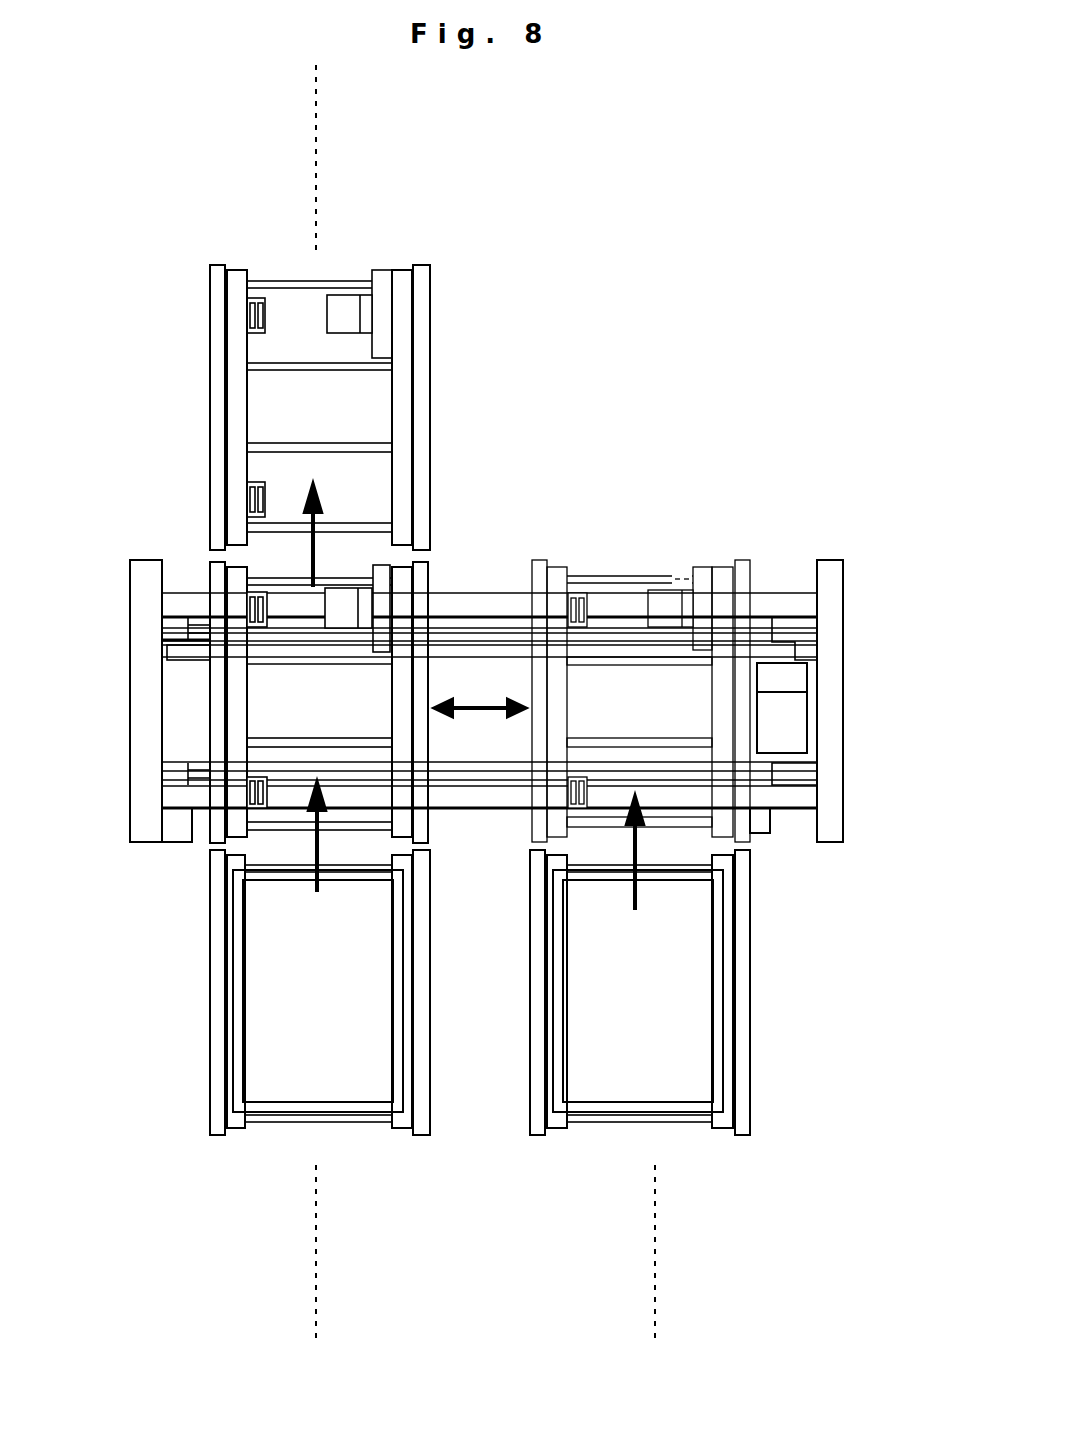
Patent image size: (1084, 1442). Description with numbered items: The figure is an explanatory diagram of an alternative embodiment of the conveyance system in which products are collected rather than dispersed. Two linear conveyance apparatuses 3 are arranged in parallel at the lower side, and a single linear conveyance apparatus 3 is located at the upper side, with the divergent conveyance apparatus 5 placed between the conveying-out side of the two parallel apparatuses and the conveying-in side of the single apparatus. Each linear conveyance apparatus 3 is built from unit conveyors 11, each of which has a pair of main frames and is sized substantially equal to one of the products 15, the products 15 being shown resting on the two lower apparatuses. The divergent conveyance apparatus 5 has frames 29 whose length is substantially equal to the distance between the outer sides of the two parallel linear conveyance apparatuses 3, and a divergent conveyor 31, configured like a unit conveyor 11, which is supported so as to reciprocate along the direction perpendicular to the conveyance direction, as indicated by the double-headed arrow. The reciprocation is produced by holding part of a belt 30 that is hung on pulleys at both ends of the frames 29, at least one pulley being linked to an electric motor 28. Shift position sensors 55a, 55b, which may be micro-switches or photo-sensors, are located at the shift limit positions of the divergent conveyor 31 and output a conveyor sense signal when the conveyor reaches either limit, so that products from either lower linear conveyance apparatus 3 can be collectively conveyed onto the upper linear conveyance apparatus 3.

The linear conveyance apparatus 3 is at (445, 223).
The divergent conveyance apparatus 5 is at (768, 500).
The unit conveyor 11 is at (430, 305).
The product 15 is at (255, 985).
The electric motor 28 is at (786, 724).
The frame 29 is at (492, 605).
The belt 30 is at (760, 650).
The divergent conveyor 31 is at (217, 580).
The shift position sensor 55a is at (193, 840).
The shift position sensor 55b is at (760, 826).